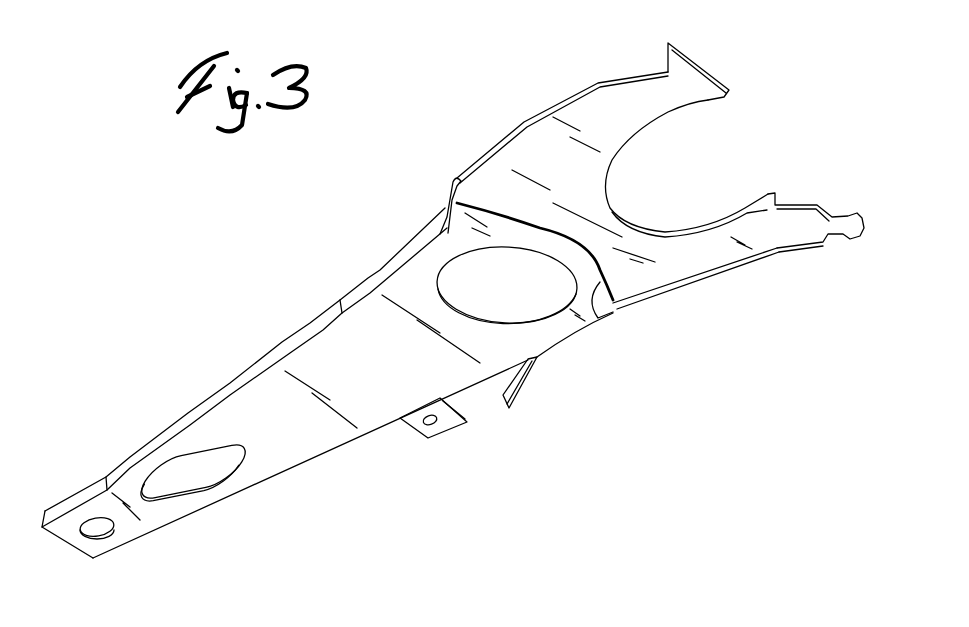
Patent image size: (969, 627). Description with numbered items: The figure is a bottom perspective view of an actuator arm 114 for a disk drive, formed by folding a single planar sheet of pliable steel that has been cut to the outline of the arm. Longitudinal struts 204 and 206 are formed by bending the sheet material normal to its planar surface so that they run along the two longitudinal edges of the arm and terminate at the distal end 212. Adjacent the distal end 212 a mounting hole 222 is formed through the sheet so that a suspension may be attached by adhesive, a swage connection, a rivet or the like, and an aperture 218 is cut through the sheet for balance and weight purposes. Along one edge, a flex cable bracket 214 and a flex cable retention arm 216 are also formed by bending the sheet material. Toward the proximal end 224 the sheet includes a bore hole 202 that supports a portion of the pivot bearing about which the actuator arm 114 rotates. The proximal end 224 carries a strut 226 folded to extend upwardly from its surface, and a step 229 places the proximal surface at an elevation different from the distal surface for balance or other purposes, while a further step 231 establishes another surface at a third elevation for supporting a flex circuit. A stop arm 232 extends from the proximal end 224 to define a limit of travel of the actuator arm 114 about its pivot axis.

The actuator arm 114 is at (280, 230).
The bore hole 202 is at (537, 293).
The longitudinal strut 204 is at (228, 392).
The longitudinal strut 206 is at (327, 453).
The distal end 212 is at (67, 541).
The flex cable bracket 214 is at (443, 437).
The flex cable retention arm 216 is at (522, 395).
The aperture 218 is at (198, 478).
The mounting hole 222 is at (110, 536).
The proximal end 224 is at (703, 63).
The strut 226 is at (651, 230).
The step 229 is at (596, 320).
The step 231 is at (730, 268).
The stop arm 232 is at (847, 216).